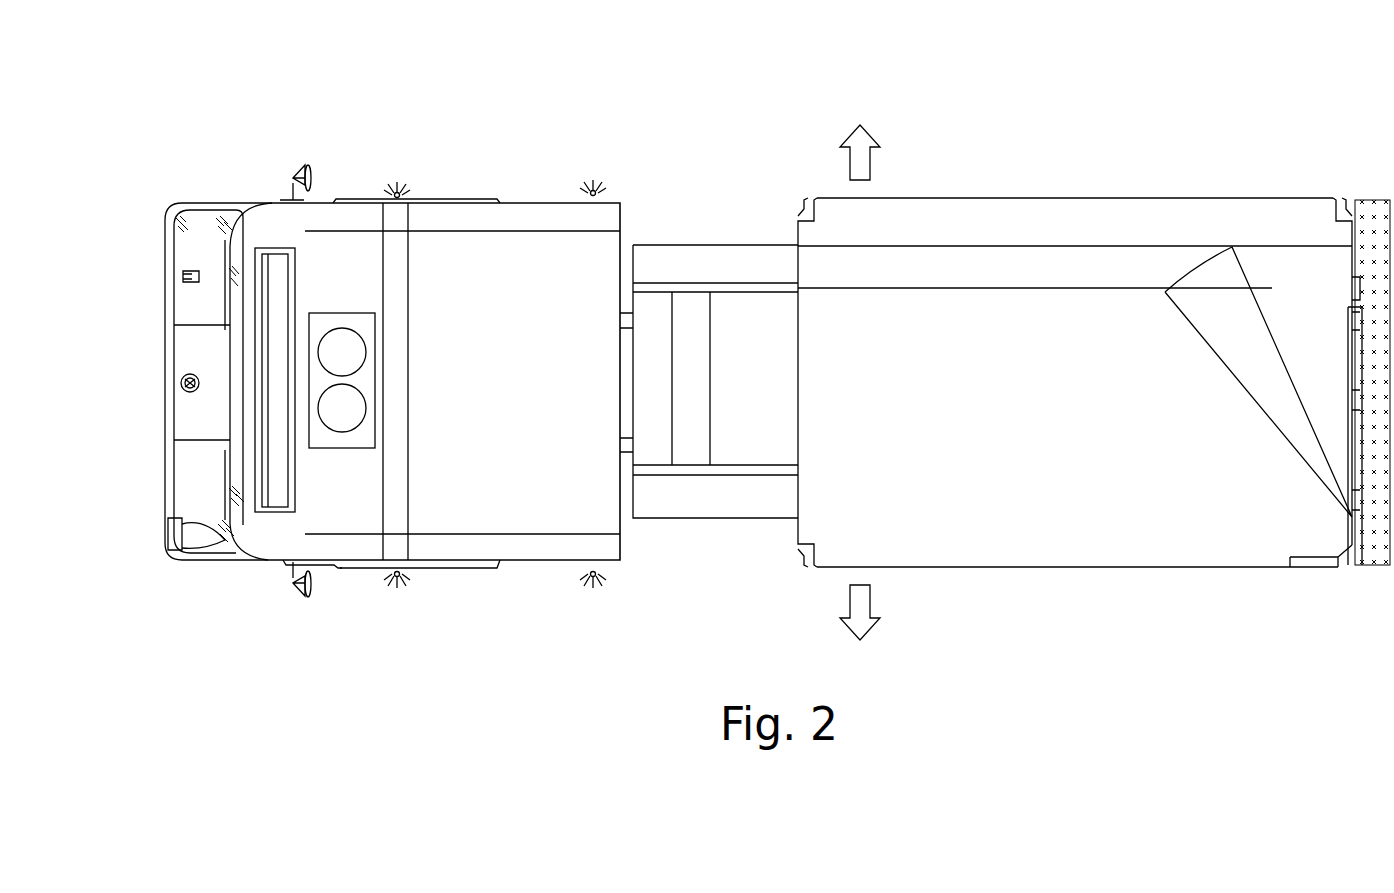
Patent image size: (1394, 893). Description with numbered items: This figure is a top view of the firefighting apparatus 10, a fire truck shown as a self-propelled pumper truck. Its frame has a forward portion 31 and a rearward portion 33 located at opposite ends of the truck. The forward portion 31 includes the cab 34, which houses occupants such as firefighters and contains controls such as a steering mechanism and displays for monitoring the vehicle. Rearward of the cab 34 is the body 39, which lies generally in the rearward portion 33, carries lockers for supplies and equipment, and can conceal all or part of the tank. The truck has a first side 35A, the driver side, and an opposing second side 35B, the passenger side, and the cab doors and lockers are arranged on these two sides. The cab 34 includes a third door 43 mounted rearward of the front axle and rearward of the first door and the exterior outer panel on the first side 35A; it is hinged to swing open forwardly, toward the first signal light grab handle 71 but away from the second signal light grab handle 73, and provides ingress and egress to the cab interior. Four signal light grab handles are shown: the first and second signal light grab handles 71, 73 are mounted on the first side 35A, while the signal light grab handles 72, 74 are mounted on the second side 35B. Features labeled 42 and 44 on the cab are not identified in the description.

The firefighting apparatus 10 is at (250, 122).
The forward portion 31 is at (392, 112).
The rearward portion 33 is at (1021, 118).
The cab 34 is at (262, 214).
The first side 35A is at (860, 626).
The second side 35B is at (860, 141).
The body 39 is at (342, 588).
The top edge flange 42 is at (341, 178).
The third door 43 is at (492, 582).
The top plate 44 is at (494, 178).
The first signal light grab handle 71 is at (404, 562).
The signal light grab handle 72 is at (404, 201).
The second signal light grab handle 73 is at (590, 562).
The fourth signal light grab handle 74 is at (590, 199).